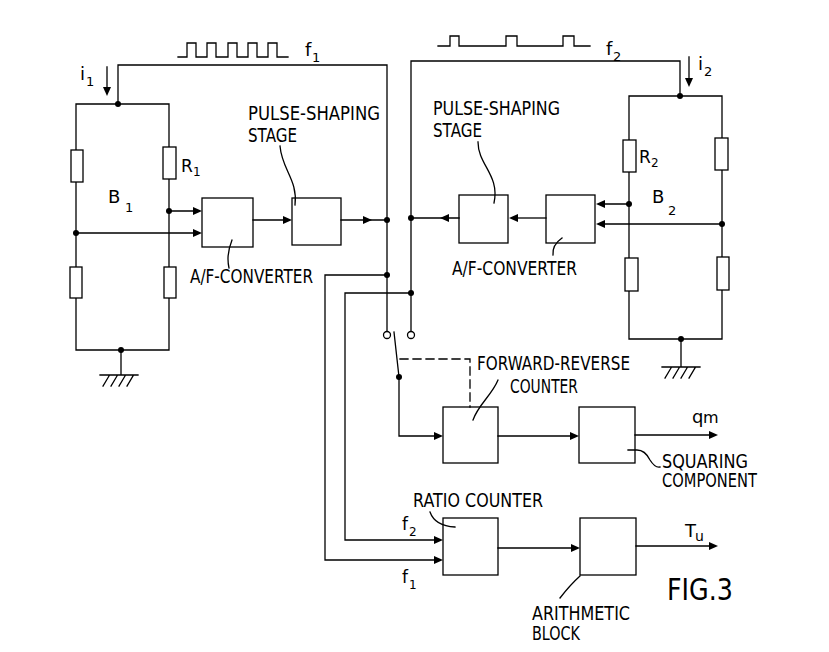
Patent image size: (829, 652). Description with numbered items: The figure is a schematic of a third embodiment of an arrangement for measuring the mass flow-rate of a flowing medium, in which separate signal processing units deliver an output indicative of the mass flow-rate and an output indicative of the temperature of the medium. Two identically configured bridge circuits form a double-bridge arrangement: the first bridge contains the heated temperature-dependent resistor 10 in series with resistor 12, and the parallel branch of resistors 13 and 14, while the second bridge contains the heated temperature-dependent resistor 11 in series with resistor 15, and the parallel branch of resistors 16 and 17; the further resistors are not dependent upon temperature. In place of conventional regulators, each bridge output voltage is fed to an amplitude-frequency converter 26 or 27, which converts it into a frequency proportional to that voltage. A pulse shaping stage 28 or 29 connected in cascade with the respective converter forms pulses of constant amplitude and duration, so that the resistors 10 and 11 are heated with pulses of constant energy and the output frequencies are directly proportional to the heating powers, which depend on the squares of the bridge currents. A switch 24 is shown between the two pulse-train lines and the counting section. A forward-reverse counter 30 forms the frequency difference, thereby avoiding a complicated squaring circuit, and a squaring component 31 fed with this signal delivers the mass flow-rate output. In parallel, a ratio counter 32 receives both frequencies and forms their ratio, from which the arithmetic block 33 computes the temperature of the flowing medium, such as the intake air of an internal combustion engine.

The temperature-dependent resistor 10 is at (163, 165).
The temperature-dependent resistor 11 is at (623, 160).
The resistor 12 is at (164, 279).
The resistor 13 is at (83, 165).
The resistor 14 is at (82, 282).
The resistor 15 is at (625, 275).
The resistor 16 is at (715, 155).
The resistor 17 is at (718, 276).
The switch 24 is at (394, 348).
The amplitude-frequency converter 26 is at (231, 205).
The amplitude-frequency converter 27 is at (566, 208).
The pulse shaping stage 28 is at (309, 207).
The pulse shaping stage 29 is at (481, 205).
The forward-reverse counter 30 is at (470, 455).
The squaring component 31 is at (612, 452).
The ratio counter 32 is at (468, 565).
The arithmetic block 33 is at (592, 565).